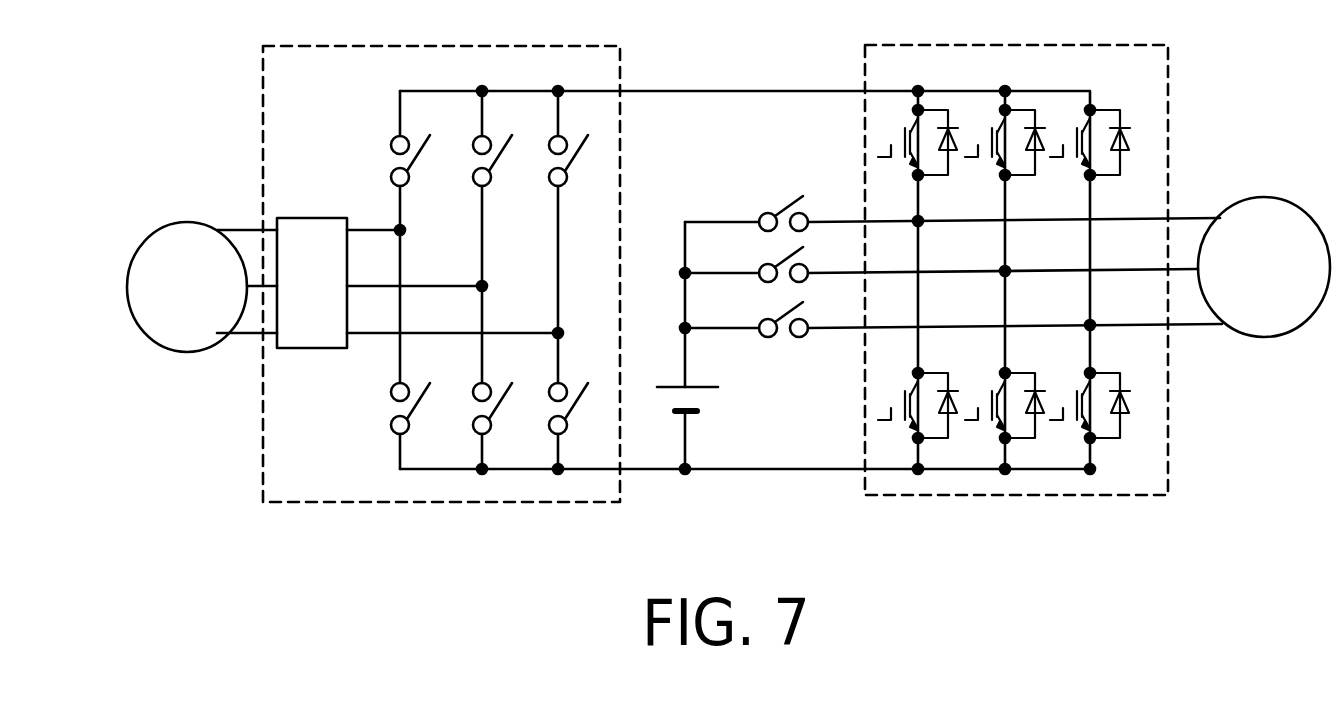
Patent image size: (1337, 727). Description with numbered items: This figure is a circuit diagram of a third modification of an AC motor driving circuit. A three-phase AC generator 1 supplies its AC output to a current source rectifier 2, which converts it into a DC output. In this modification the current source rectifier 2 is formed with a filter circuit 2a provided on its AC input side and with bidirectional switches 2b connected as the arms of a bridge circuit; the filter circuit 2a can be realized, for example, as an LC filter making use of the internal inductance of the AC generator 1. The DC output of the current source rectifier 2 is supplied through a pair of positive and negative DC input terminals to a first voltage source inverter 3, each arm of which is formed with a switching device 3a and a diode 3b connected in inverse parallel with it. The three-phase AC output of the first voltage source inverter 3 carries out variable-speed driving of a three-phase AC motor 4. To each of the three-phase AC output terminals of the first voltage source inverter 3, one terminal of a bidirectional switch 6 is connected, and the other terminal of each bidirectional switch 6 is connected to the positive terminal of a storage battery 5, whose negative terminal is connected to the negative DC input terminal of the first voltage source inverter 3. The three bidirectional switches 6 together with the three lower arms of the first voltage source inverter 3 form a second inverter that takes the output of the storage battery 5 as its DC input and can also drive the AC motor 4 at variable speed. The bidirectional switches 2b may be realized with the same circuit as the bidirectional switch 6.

The three-phase AC generator 1 is at (187, 287).
The current source rectifier 2 is at (441, 274).
The filter circuit 2a is at (312, 283).
The bidirectional switch 2b is at (503, 271).
The first voltage source inverter 3 is at (1016, 270).
The switching device 3a is at (983, 262).
The diode 3b is at (1040, 274).
The three-phase AC motor 4 is at (1264, 267).
The storage battery 5 is at (695, 428).
The bidirectional switch 6 is at (772, 254).